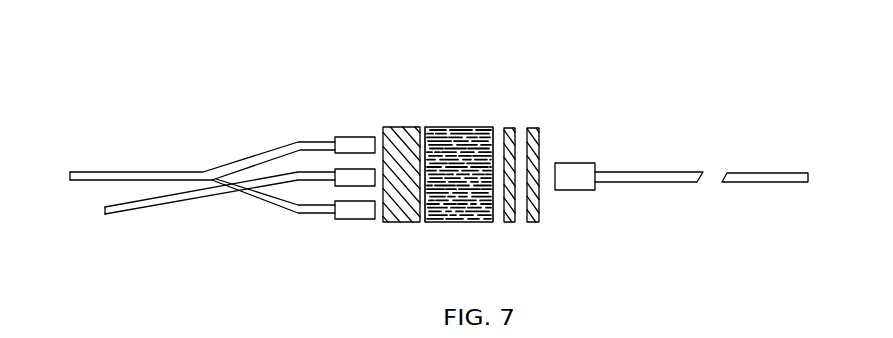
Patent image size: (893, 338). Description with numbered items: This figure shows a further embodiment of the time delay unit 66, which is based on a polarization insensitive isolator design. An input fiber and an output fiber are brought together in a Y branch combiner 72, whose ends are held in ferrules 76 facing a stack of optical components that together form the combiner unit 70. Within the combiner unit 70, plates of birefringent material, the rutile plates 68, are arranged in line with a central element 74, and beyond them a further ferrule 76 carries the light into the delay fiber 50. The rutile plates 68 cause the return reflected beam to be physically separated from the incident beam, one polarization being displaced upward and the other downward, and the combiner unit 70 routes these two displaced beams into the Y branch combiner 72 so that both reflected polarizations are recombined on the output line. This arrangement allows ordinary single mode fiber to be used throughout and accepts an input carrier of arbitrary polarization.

The optical fiber 50 is at (665, 172).
The time delay unit 66 is at (120, 88).
The rutile plates 68 is at (530, 128).
The combiner unit 70 is at (455, 60).
The Y branch combiner 72 is at (262, 150).
The Faraday rotator 74 is at (457, 127).
The fiber ferrule 76 is at (358, 137).